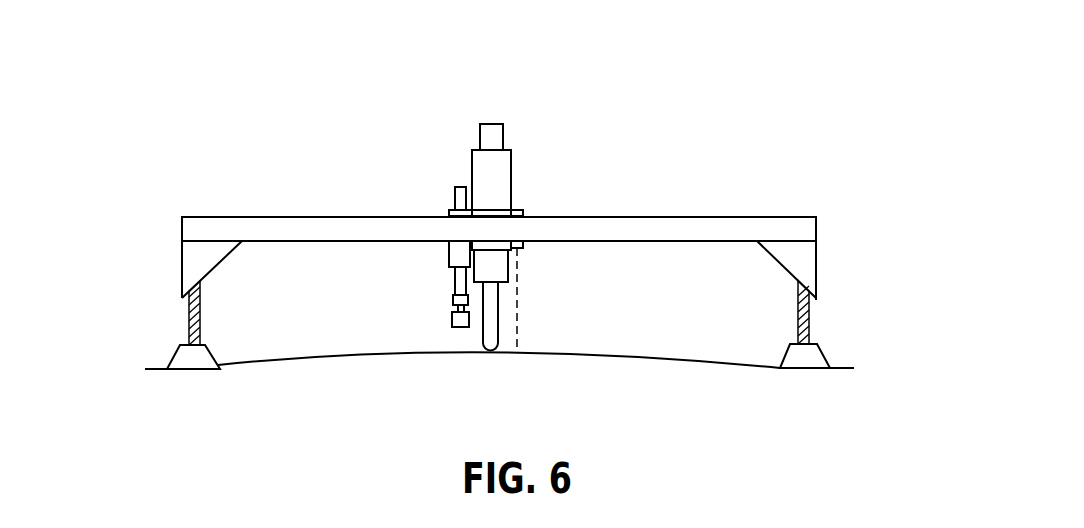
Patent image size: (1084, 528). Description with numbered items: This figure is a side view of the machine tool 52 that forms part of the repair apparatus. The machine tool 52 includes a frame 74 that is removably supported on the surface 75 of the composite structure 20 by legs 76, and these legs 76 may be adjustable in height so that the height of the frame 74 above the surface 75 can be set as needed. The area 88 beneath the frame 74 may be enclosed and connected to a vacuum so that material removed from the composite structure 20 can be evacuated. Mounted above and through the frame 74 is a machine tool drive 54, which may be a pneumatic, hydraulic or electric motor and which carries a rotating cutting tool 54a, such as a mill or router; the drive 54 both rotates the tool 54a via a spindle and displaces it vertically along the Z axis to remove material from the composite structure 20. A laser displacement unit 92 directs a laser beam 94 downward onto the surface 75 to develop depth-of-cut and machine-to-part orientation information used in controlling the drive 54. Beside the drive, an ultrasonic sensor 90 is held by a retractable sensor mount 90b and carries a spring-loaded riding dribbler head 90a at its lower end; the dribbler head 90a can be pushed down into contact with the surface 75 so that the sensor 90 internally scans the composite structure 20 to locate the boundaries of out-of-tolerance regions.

The composite structure 20 is at (247, 378).
The machine tool 52 is at (162, 146).
The machine tool drive 54 is at (495, 172).
The cutting tool 54a is at (490, 302).
The frame 74 is at (752, 232).
The surface 75 is at (663, 348).
The legs 76 is at (189, 318).
The area 88 is at (270, 284).
The ultrasonic sensor 90 is at (460, 283).
The dribbler head 90a is at (452, 310).
The retractable sensor mount 90b is at (445, 214).
The laser displacement unit 92 is at (515, 210).
The laser beam 94 is at (530, 320).